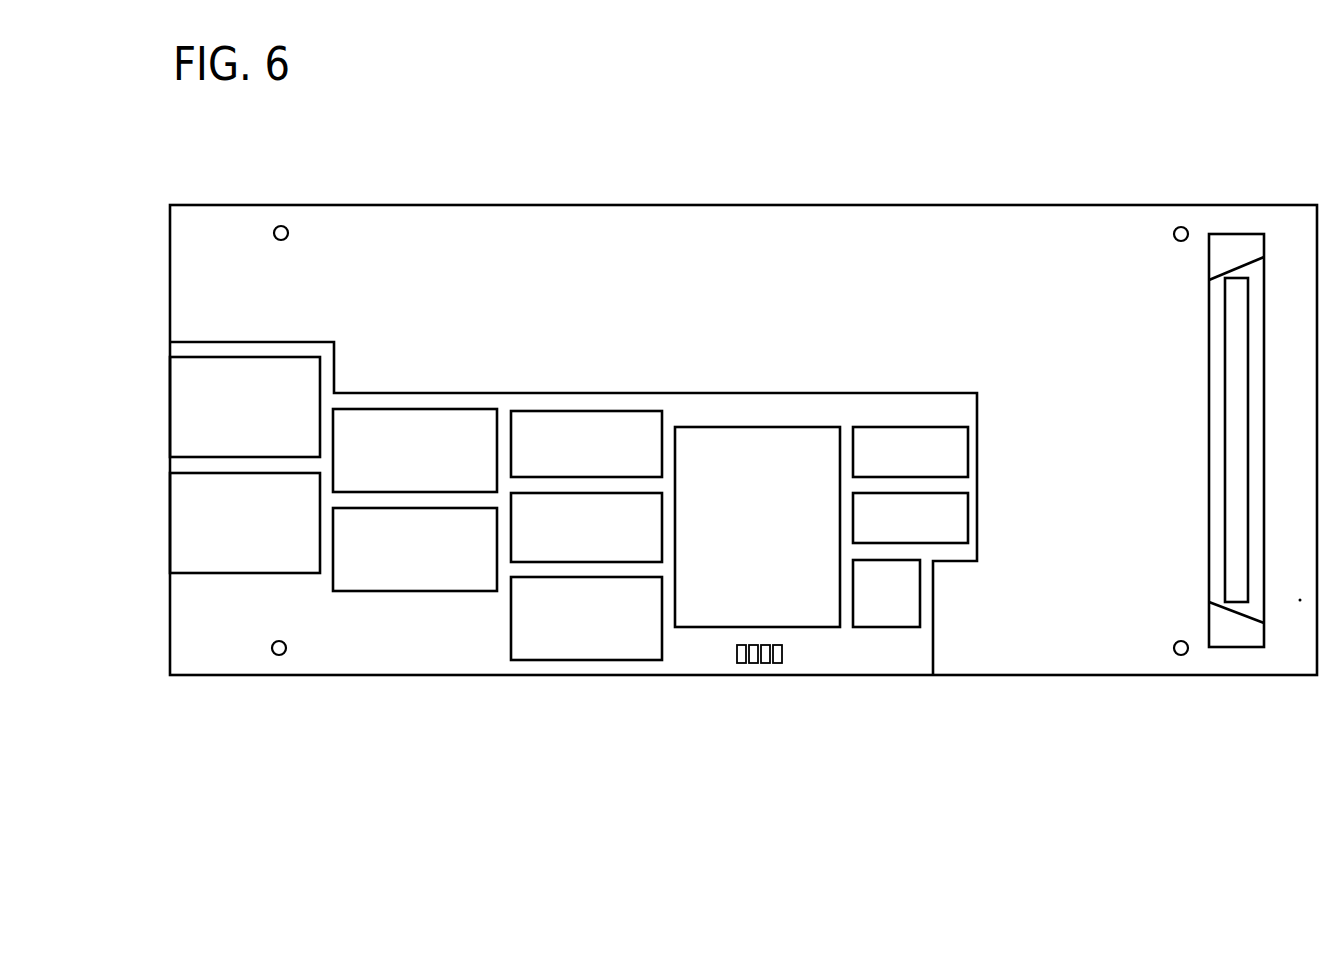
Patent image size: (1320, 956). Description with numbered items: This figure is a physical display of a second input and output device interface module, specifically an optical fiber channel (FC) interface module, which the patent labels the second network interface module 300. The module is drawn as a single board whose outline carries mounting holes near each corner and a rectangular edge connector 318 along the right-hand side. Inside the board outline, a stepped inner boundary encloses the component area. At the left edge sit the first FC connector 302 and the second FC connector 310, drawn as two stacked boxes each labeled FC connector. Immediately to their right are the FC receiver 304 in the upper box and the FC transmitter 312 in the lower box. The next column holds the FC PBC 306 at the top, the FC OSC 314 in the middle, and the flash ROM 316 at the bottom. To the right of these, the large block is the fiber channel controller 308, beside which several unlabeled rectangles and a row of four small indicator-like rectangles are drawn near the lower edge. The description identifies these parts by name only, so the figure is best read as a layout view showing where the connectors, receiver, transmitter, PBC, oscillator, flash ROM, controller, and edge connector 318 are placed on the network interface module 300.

The network interface module 2 300 is at (406, 206).
The first FC connector 302 is at (238, 355).
The FC receiver 304 is at (410, 405).
The FC PBC 306 is at (580, 409).
The fiber channel controller 308 is at (762, 424).
The second FC connector 310 is at (168, 527).
The FC transmitter 312 is at (380, 593).
The FC OSC 314 is at (512, 556).
The flash ROM 316 is at (562, 660).
The connector 318 is at (1245, 256).